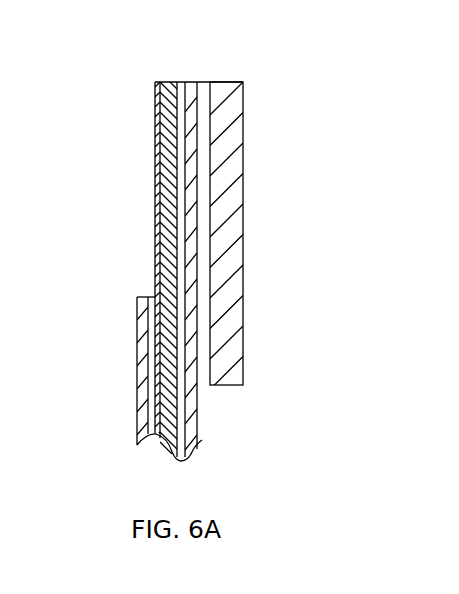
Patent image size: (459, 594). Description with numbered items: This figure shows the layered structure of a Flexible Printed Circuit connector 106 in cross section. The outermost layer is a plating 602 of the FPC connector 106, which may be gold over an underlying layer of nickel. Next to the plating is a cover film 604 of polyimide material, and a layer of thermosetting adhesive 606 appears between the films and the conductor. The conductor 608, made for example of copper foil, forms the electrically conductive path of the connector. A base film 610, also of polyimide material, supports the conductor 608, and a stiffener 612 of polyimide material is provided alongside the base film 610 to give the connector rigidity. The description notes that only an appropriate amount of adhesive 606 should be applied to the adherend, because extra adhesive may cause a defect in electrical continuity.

The Flexible Printed Circuit connector 106 is at (161, 44).
The plating 602 is at (155, 193).
The cover film 604 is at (142, 323).
The layer of thermosetting adhesive 606 is at (148, 362).
The conductor 608 is at (163, 406).
The base film 610 is at (198, 402).
The stiffener 612 is at (235, 300).